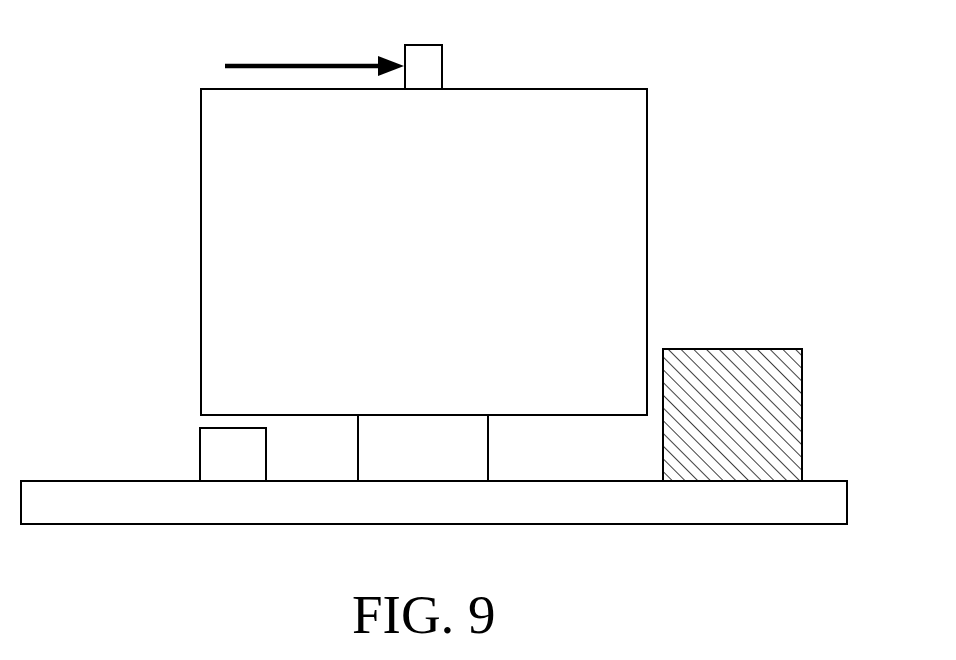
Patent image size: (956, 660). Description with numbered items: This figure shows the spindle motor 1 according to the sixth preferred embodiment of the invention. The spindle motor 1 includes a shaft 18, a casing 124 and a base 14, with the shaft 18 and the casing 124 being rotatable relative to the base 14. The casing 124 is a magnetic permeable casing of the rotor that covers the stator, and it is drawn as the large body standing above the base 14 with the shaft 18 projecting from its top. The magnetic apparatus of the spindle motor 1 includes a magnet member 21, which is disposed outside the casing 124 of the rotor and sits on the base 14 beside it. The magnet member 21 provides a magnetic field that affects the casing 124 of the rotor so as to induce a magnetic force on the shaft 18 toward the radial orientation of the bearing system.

The spindle motor 1 is at (705, 178).
The base 14 is at (147, 481).
The shaft 18 is at (405, 52).
The magnet member 21 is at (775, 355).
The casing 124 is at (201, 207).